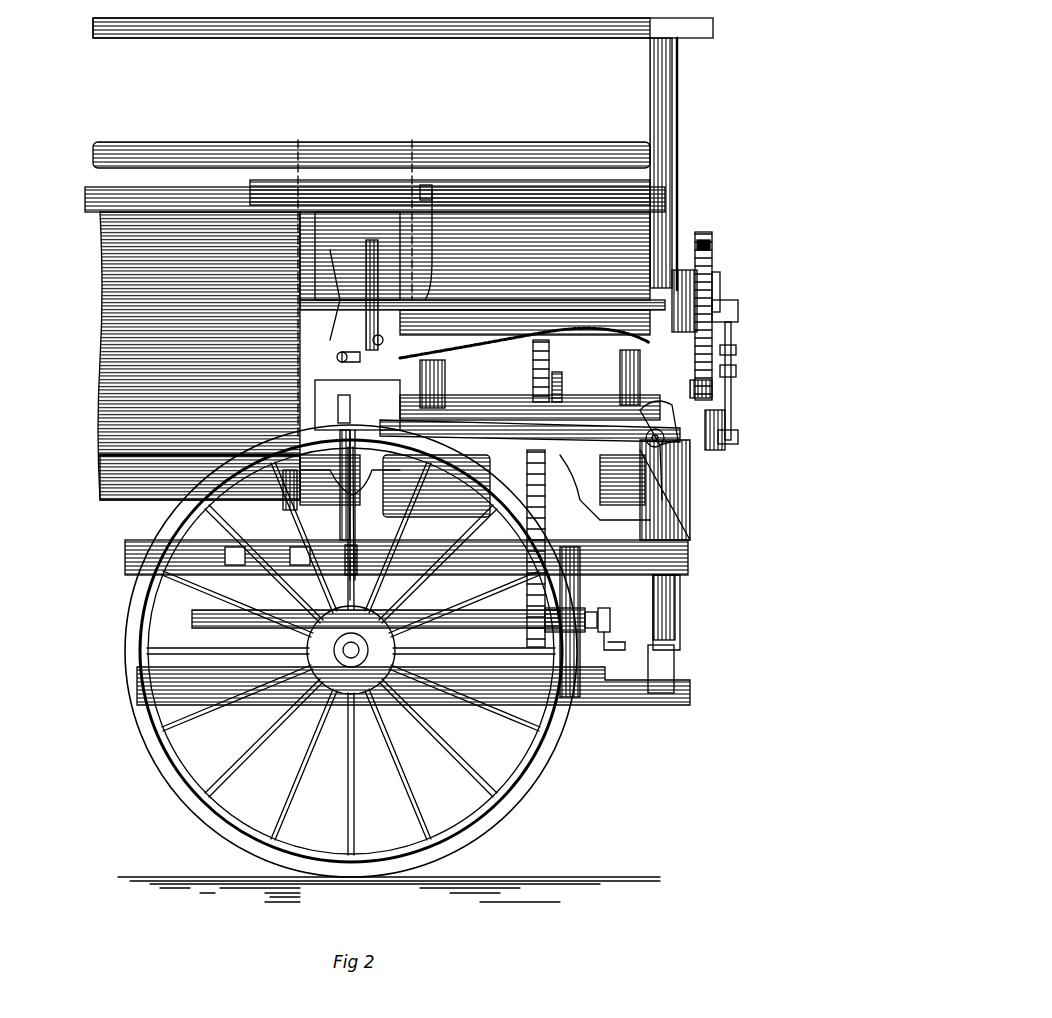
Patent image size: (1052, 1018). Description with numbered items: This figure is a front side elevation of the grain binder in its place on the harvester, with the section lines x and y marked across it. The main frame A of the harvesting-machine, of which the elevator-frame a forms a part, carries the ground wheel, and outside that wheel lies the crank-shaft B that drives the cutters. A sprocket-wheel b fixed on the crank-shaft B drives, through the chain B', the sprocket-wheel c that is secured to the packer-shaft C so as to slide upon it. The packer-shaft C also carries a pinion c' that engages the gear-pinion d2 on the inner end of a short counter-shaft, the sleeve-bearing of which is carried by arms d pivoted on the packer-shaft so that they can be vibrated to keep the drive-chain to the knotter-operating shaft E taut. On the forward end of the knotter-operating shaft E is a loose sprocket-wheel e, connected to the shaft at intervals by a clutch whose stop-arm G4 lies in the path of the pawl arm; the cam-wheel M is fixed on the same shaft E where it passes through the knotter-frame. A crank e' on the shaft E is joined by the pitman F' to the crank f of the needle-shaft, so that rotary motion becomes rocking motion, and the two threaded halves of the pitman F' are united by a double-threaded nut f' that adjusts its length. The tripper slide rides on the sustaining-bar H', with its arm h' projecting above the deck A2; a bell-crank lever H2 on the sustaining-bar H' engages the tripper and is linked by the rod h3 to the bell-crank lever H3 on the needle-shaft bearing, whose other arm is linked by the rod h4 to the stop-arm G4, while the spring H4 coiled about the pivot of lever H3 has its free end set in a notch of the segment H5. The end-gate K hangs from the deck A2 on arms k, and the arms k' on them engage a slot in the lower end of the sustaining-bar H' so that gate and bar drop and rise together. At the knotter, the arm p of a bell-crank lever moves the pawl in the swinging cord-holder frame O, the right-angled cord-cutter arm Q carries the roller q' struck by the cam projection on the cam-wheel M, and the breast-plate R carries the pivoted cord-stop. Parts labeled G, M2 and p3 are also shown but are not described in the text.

The main frame A is at (435, 572).
The deck A2 is at (125, 348).
The elevator-frame a is at (674, 663).
The crank-shaft B is at (585, 615).
The chain B' is at (579, 664).
The sprocket-wheel b is at (527, 600).
The packer-shaft C is at (441, 384).
The sprocket-wheel c is at (551, 371).
The pinion c' is at (570, 385).
The arms d is at (712, 390).
The gear-pinion d2 is at (622, 360).
The knotter-operating shaft E is at (712, 262).
The sprocket-wheel e is at (715, 228).
The crank e' is at (739, 283).
The pitman F' is at (749, 381).
The crank f is at (739, 455).
The nut f' is at (746, 361).
The gear plate G is at (680, 272).
The stop-arm G4 is at (738, 305).
The sustaining-bar H' is at (364, 612).
The bell-crank lever H2 is at (450, 500).
The bell-crank lever H3 is at (664, 450).
The spring H4 is at (650, 430).
The notched segment H5 is at (670, 430).
The arm h' is at (391, 476).
The rod h3 is at (672, 500).
The rod h4 is at (725, 425).
The end-gate K is at (118, 490).
The arms k is at (387, 553).
The arm k' is at (191, 529).
The cam-wheel M is at (372, 240).
The pivot pin M2 is at (337, 355).
The cord-holder frame O is at (330, 380).
The arm p is at (357, 256).
The plunger pivot p3 is at (373, 340).
The right-angled arm Q is at (525, 353).
The anti-friction roller q' is at (470, 206).
The breast-plate R is at (340, 265).
The section line x x is at (382, 345).
The section line y y is at (312, 357).